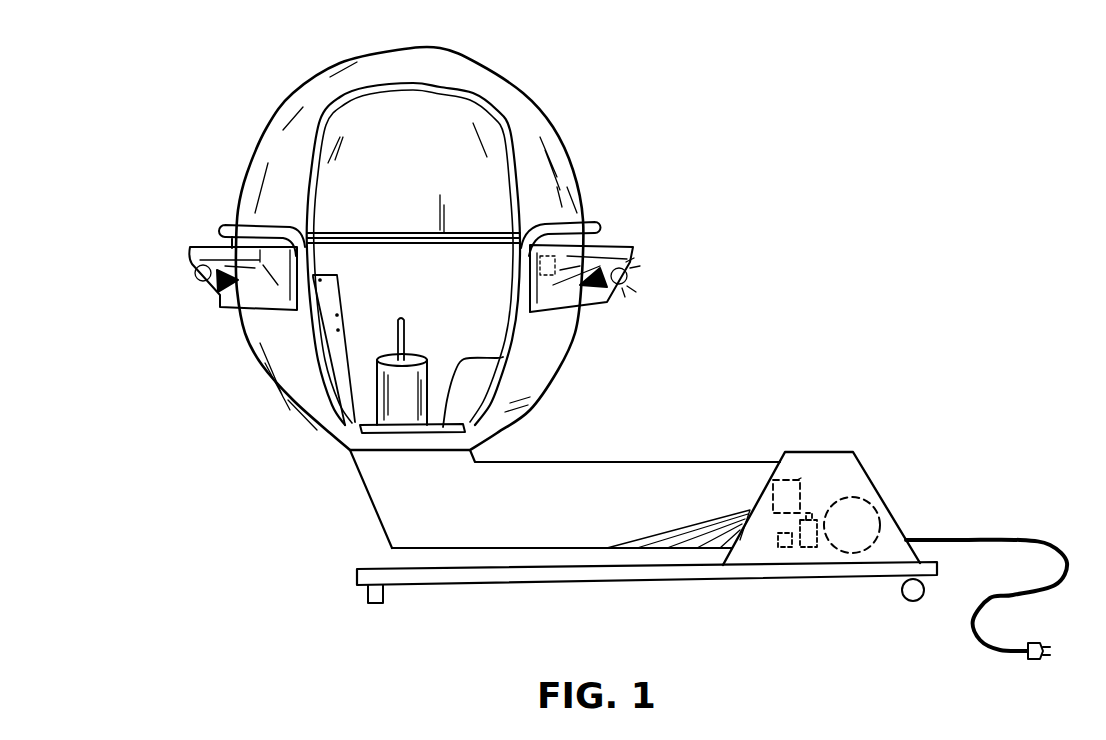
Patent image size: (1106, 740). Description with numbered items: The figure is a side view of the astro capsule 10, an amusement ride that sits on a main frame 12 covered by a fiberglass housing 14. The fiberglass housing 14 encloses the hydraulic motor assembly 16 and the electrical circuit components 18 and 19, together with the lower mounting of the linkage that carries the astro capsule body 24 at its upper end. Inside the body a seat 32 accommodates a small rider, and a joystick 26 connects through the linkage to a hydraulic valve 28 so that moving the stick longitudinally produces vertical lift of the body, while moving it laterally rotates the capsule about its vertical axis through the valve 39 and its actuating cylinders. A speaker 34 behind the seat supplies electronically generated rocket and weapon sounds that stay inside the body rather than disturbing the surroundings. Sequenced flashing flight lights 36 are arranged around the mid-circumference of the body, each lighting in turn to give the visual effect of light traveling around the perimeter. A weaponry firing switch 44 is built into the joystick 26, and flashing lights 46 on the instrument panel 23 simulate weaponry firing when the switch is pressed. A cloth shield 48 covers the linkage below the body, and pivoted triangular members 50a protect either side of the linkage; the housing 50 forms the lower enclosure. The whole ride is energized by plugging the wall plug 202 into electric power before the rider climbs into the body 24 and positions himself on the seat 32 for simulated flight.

The astro capsule 10 is at (618, 88).
The main frame 12 is at (607, 582).
The fiberglass housing 14 is at (870, 476).
The hydraulic motor assembly 16 is at (880, 520).
The electrical circuit components 18 is at (786, 480).
The electrical circuit components 19 is at (799, 480).
The instrument panel 23 is at (345, 322).
The astro capsule body 24 is at (410, 279).
The joystick 26 is at (404, 336).
The hydraulic valve 28 is at (787, 548).
The seat 32 is at (463, 360).
The speaker 34 is at (545, 252).
The sequenced flashing flight lights 36 is at (630, 277).
The valve 39 is at (803, 550).
The weaponry firing switch 44 is at (401, 319).
The flashing lights 46 is at (337, 278).
The cloth shield 48 is at (363, 487).
The housing 50 is at (545, 509).
The triangular members 50a is at (715, 540).
The wall plug 202 is at (1039, 640).